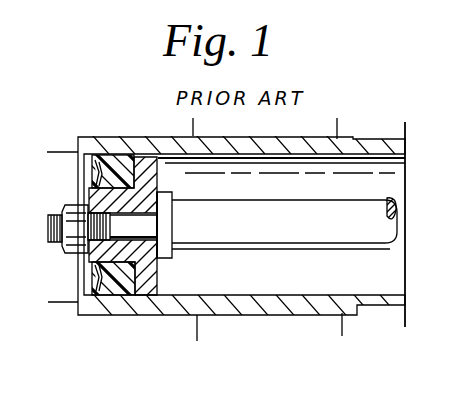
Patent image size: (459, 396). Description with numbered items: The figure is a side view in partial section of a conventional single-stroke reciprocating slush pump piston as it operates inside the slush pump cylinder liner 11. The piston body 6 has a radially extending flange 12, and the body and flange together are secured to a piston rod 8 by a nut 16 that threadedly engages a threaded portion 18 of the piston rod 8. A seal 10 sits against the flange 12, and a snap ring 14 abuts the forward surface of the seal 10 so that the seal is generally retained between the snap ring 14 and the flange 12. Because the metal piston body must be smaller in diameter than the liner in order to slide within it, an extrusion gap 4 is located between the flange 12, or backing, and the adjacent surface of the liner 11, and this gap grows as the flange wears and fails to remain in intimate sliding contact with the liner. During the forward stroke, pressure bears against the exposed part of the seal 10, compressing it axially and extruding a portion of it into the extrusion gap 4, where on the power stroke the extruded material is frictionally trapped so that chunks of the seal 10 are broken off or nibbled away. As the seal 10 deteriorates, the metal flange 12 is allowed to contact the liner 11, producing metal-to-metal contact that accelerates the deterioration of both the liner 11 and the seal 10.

The extrusion gap 4 is at (148, 154).
The piston body 6 is at (42, 181).
The piston rod 8 is at (368, 223).
The seal 10 is at (113, 163).
The cylinder liner 11 is at (231, 293).
The radially extending flange 12 is at (148, 296).
The snap ring 14 is at (107, 268).
The nut 16 is at (66, 250).
The threaded portion 18 is at (50, 221).